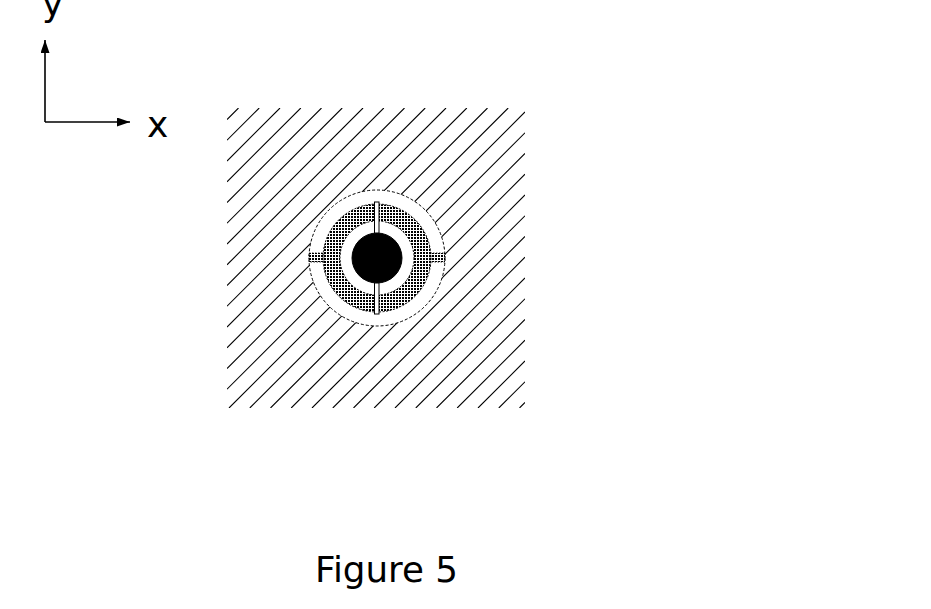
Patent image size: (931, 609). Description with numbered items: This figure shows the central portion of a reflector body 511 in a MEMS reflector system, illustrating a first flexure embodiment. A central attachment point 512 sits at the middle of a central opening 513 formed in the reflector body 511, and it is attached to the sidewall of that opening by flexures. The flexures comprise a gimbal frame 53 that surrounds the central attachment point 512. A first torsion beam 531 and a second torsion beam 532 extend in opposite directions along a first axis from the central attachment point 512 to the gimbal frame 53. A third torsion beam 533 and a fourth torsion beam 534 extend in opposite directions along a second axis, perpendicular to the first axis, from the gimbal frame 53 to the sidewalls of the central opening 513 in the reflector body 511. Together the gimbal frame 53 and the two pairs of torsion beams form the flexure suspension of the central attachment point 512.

The reflector body 511 is at (363, 383).
The central attachment point 512 is at (362, 252).
The central opening 513 is at (362, 315).
The gimbal frame 53 is at (396, 218).
The first torsion beam 531 is at (382, 290).
The second torsion beam 532 is at (379, 229).
The third torsion beam 533 is at (440, 262).
The fourth torsion beam 534 is at (308, 255).